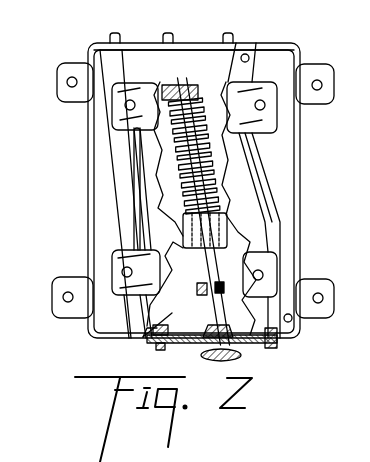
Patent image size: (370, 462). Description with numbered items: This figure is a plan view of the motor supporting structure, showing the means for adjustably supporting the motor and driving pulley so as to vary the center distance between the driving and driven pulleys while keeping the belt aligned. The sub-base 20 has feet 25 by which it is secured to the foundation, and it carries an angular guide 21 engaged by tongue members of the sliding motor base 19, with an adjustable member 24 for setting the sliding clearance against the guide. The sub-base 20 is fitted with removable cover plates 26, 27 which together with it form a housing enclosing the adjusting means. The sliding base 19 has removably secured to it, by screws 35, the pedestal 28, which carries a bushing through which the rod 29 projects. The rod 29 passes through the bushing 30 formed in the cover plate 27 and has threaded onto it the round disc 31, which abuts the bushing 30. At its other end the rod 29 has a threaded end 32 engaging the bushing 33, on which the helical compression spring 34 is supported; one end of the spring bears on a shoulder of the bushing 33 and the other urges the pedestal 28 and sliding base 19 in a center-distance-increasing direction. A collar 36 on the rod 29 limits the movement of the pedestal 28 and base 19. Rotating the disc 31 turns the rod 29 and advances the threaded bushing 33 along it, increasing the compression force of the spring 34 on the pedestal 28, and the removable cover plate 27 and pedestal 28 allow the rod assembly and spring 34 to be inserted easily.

The sliding motor base 19 is at (259, 82).
The sub-base 20 is at (88, 167).
The angular guide 21 is at (108, 68).
The adjustable member 24 is at (258, 50).
The feet 25 is at (56, 309).
The removable cover plate 26 is at (196, 42).
The removable cover plate 27 is at (253, 347).
The pedestal 28 is at (218, 246).
The rod 29 is at (198, 293).
The bushing 30 is at (203, 351).
The round disc 31 is at (240, 358).
The threaded end 32 is at (176, 153).
The bushing 33 is at (177, 85).
The helical compression spring 34 is at (176, 181).
The screws 35 is at (183, 222).
The collar 36 is at (222, 294).